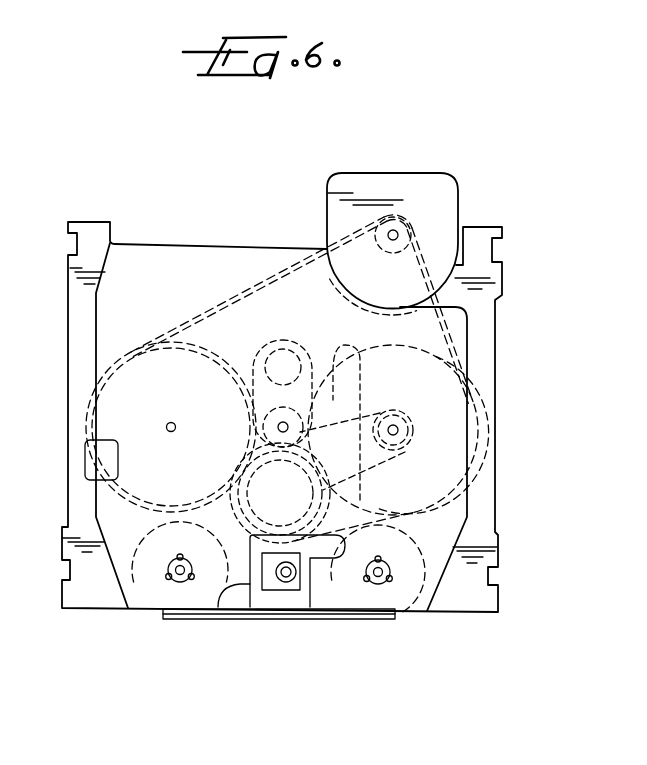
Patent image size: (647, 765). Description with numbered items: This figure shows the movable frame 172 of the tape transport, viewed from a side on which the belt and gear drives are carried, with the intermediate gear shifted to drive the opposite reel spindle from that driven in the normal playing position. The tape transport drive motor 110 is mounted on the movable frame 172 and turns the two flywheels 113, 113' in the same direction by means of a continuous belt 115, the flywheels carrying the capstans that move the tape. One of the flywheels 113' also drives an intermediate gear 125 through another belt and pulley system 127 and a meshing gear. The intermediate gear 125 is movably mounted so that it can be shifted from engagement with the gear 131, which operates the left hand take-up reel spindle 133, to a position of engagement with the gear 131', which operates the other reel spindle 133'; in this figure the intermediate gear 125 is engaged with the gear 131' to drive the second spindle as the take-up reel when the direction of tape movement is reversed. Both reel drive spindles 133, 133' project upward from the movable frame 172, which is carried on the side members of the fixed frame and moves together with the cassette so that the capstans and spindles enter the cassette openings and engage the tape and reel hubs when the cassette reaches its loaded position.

The tape transport drive motor 110 is at (460, 194).
The flywheel 113 is at (131, 427).
The flywheel 113' is at (472, 430).
The continuous belt 115 is at (453, 327).
The intermediate gear 125 is at (328, 615).
The belt and pulley system 127 is at (440, 490).
The gear 131 is at (150, 600).
The gear 131' is at (483, 569).
The reel spindle 133 is at (196, 617).
The reel spindle 133' is at (416, 621).
The movable frame 172 is at (487, 368).